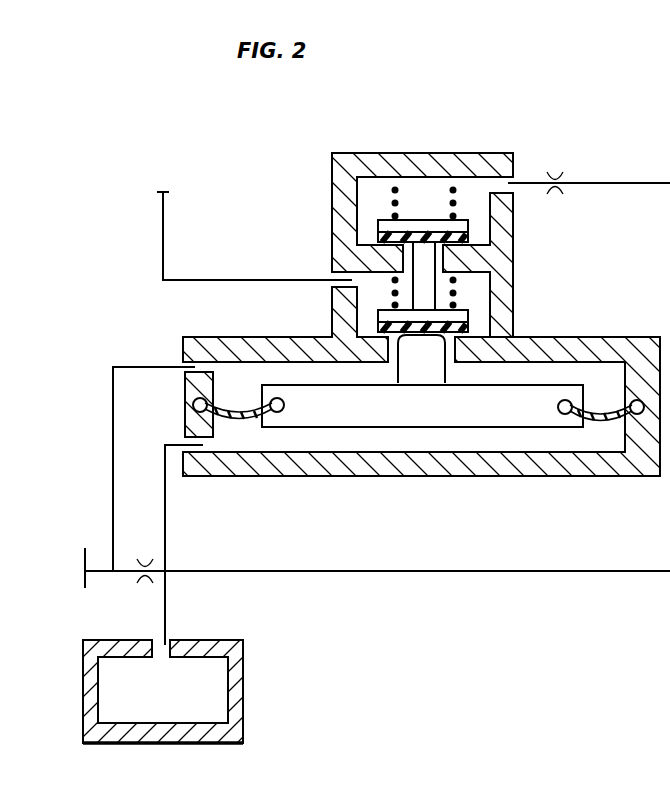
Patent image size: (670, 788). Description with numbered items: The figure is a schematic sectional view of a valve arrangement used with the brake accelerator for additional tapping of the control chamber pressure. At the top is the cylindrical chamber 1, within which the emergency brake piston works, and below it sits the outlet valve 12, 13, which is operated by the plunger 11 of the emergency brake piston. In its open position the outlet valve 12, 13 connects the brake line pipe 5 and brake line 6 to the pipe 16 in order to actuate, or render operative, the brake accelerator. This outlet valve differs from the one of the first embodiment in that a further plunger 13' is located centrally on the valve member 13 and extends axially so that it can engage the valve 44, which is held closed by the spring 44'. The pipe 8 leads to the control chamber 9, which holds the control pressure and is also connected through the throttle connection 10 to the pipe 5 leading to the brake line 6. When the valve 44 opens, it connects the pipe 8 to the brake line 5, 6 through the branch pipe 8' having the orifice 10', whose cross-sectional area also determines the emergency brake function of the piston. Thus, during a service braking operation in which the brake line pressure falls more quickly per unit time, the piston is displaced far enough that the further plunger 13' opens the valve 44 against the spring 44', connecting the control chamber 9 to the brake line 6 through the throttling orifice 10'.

The cylindrical chamber 1 is at (425, 190).
The valve 44 is at (480, 211).
The spring 44' is at (379, 213).
The valve member 13 is at (467, 309).
The further plunger 13' is at (470, 265).
The orifice 10' is at (589, 154).
The pipe 16 is at (292, 282).
The plunger 11 is at (428, 378).
The outlet valve 12 is at (393, 337).
The pipe 5 is at (112, 467).
The pipe 8 is at (190, 545).
The throttle connection 10 is at (150, 540).
The branch pipe 8' is at (377, 600).
The brake line 6 is at (88, 583).
The control chamber 9 is at (205, 717).